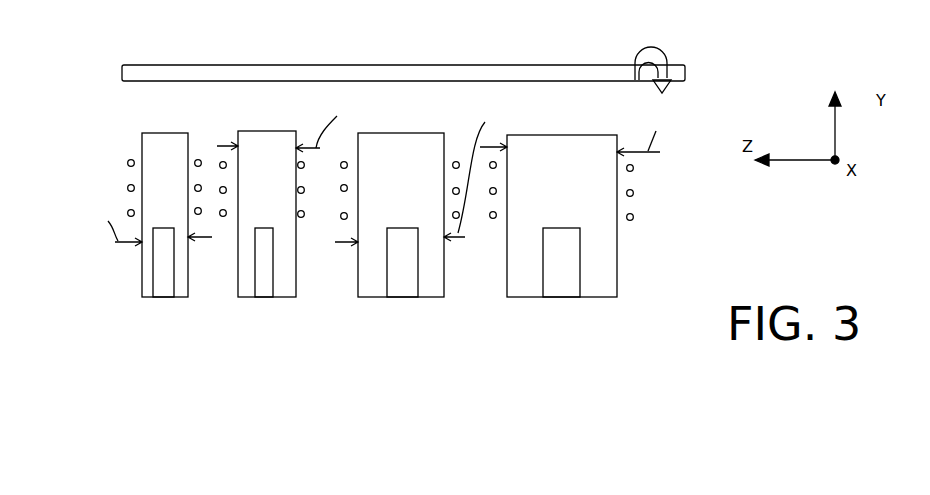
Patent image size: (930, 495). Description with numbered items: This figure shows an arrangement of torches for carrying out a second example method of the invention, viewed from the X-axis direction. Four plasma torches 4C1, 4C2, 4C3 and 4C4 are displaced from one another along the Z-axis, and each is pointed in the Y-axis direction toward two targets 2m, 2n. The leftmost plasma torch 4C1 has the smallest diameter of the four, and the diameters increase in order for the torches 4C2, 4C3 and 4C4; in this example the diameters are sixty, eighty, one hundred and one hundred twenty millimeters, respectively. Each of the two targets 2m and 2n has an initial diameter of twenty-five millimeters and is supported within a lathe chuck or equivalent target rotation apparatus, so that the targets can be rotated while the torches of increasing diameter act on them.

The target 2m is at (373, 55).
The target 2n is at (403, 53).
The plasma torch 4C1 is at (130, 285).
The plasma torch 4C2 is at (237, 287).
The plasma torch 4C3 is at (357, 285).
The plasma torch 4C4 is at (505, 285).